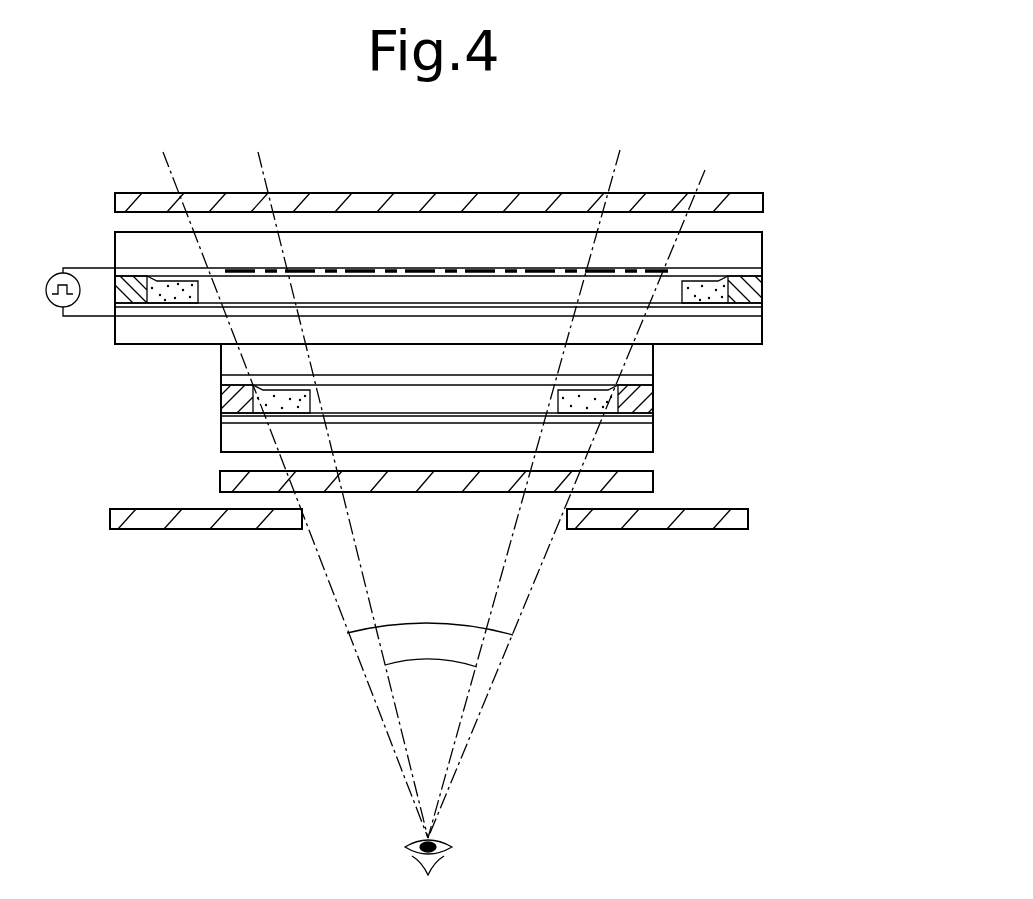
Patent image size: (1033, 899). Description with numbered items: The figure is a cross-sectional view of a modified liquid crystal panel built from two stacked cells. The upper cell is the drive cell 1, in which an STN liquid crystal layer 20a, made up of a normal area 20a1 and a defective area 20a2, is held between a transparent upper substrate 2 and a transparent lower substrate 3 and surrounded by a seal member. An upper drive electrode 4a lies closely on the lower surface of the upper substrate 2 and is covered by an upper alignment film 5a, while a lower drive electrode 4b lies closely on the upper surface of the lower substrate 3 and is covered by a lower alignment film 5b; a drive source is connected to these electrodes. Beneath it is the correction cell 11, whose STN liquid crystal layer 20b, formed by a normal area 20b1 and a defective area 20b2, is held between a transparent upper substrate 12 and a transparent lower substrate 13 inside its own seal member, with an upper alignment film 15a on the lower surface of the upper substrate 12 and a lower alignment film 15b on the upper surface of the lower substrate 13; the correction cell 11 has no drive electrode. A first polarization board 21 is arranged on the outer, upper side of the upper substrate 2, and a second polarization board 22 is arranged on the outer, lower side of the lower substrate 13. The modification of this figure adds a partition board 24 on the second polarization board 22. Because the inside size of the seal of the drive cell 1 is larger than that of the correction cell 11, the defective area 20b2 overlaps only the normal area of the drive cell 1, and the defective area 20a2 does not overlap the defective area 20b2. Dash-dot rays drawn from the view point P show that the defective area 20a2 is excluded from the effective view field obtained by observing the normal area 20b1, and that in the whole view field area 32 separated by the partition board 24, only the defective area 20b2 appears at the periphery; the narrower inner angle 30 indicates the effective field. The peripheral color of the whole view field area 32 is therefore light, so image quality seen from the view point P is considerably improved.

The drive cell 1 is at (38, 227).
The upper substrate 2 is at (753, 247).
The lower substrate 3 is at (737, 338).
The upper drive electrode 4a is at (490, 267).
The lower drive electrode 4b is at (668, 317).
The upper alignment film 5a is at (717, 272).
The lower alignment film 5b is at (703, 312).
The correction cell 11 is at (192, 350).
The upper substrate 12 is at (647, 363).
The lower substrate 13 is at (647, 440).
The upper alignment film 15a is at (590, 387).
The lower alignment film 15b is at (572, 418).
The STN liquid crystal layer 20a is at (507, 196).
The normal area 20a1 is at (627, 290).
The defective area 20a2 is at (693, 283).
The STN liquid crystal layer 20b is at (479, 556).
The normal area 20b1 is at (482, 402).
The defective area 20b2 is at (562, 390).
The first polarization board 21 is at (118, 200).
The second polarization board 22 is at (220, 480).
The partition board 24 is at (207, 520).
The viewing angle 30 is at (413, 662).
The whole view field area 32 is at (400, 623).
The view point P is at (415, 852).